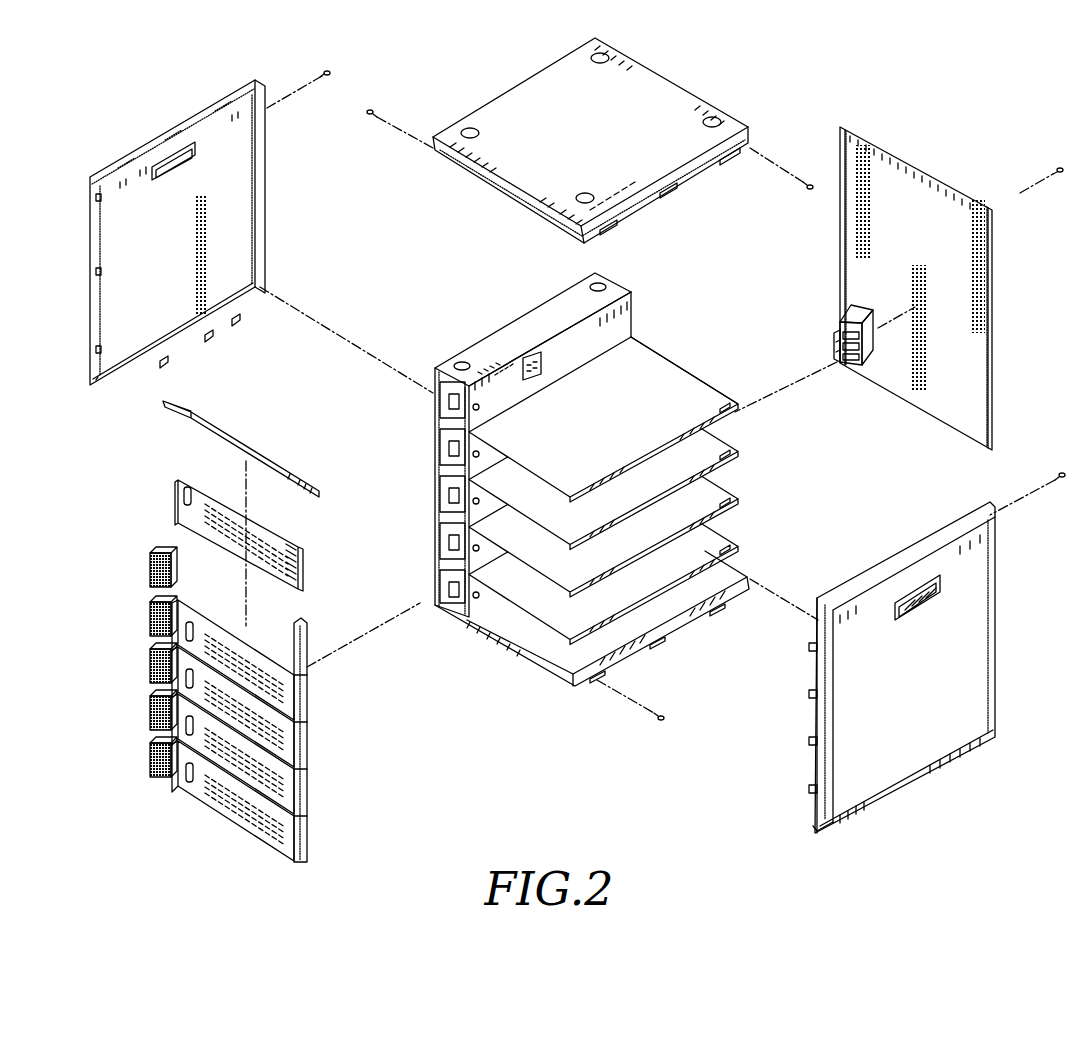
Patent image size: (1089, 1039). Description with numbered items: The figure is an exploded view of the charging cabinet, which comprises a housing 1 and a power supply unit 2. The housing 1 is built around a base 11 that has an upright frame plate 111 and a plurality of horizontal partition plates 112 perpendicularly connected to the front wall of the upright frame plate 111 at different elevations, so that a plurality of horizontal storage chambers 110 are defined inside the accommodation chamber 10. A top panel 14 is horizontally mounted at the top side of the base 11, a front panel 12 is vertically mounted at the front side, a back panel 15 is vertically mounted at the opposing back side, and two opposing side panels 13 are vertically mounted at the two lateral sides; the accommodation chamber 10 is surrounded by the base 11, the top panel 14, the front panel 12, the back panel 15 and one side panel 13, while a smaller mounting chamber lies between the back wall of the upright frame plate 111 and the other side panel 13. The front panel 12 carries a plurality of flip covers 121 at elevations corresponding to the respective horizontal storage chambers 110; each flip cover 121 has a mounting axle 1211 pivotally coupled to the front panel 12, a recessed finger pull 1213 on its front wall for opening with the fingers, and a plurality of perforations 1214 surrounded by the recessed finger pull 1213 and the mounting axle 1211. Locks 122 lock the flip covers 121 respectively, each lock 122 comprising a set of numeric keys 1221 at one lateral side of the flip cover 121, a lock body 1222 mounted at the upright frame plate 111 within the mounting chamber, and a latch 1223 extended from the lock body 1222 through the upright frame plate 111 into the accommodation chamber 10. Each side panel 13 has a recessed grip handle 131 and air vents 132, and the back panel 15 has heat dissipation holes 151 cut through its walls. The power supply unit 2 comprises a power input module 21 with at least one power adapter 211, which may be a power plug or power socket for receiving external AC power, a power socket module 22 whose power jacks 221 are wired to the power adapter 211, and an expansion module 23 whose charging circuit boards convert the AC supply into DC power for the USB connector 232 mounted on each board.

The housing 1 is at (521, 794).
The accommodation chamber 10 is at (828, 497).
The base 11 is at (583, 453).
The horizontal storage chambers 110 is at (730, 437).
The upright frame plate 111 is at (615, 330).
The horizontal partition plates 112 is at (665, 378).
The front panel 12 is at (225, 631).
The flip covers 121 is at (243, 535).
The mounting axle 1211 is at (292, 543).
The recessed finger pull 1213 is at (183, 502).
The perforations 1214 is at (206, 508).
The locks 122 is at (162, 704).
The numeric keys 1221 is at (150, 570).
The lock body 1222 is at (448, 400).
The latch 1223 is at (445, 428).
The side panels 13 is at (586, 452).
The recessed grip handle 131 is at (918, 604).
The air vents 132 is at (208, 218).
The top panel 14 is at (670, 93).
The back panel 15 is at (951, 273).
The heat dissipation holes 151 is at (862, 145).
The power supply unit 2 is at (825, 308).
The power input module 21 is at (787, 293).
The power adapter 211 is at (842, 340).
The power socket module 22 is at (483, 270).
The power jacks 221 is at (528, 360).
The expansion module 23 is at (432, 293).
The USB connector 232 is at (480, 375).